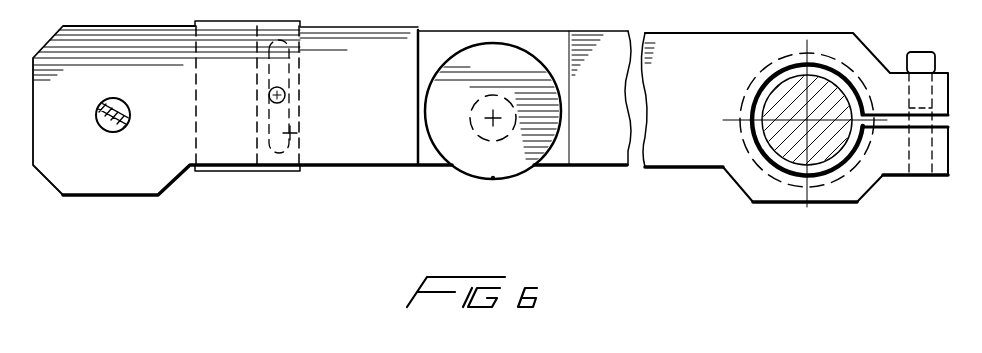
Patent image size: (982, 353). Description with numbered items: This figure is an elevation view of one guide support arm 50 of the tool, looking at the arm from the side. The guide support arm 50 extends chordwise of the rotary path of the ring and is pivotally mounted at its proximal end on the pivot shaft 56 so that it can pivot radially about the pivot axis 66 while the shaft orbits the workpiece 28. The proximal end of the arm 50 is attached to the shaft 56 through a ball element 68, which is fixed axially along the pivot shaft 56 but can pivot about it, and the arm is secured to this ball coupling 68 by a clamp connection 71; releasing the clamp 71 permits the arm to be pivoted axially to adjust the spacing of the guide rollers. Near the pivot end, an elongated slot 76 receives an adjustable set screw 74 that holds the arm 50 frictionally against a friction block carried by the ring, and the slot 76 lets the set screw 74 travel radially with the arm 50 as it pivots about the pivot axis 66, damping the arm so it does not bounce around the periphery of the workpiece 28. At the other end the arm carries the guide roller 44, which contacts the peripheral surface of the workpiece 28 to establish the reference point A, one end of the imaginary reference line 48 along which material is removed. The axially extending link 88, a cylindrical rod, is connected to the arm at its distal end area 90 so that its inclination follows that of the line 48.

The distal end area 90 is at (88, 178).
The link 88 is at (131, 118).
The set screw 74 is at (287, 95).
The elongated slot 76 is at (297, 133).
The guide roller 44 is at (472, 160).
The imaginary reference line 48 is at (572, 0).
The workpiece 28 is at (664, 0).
The reference point A is at (716, 0).
The guide support arm 50 is at (707, 109).
The pivot axis 66 is at (803, 121).
The pivot shaft 56 is at (803, 125).
The ball element 68 is at (818, 172).
The clamp connection 71 is at (897, 83).